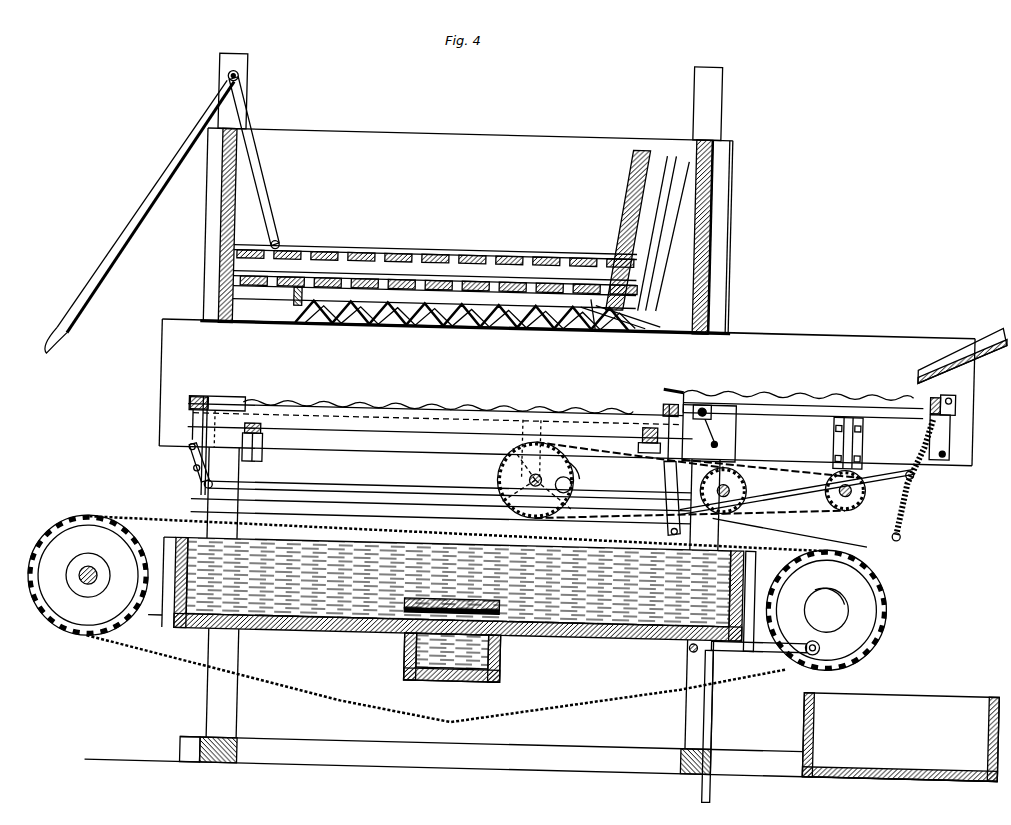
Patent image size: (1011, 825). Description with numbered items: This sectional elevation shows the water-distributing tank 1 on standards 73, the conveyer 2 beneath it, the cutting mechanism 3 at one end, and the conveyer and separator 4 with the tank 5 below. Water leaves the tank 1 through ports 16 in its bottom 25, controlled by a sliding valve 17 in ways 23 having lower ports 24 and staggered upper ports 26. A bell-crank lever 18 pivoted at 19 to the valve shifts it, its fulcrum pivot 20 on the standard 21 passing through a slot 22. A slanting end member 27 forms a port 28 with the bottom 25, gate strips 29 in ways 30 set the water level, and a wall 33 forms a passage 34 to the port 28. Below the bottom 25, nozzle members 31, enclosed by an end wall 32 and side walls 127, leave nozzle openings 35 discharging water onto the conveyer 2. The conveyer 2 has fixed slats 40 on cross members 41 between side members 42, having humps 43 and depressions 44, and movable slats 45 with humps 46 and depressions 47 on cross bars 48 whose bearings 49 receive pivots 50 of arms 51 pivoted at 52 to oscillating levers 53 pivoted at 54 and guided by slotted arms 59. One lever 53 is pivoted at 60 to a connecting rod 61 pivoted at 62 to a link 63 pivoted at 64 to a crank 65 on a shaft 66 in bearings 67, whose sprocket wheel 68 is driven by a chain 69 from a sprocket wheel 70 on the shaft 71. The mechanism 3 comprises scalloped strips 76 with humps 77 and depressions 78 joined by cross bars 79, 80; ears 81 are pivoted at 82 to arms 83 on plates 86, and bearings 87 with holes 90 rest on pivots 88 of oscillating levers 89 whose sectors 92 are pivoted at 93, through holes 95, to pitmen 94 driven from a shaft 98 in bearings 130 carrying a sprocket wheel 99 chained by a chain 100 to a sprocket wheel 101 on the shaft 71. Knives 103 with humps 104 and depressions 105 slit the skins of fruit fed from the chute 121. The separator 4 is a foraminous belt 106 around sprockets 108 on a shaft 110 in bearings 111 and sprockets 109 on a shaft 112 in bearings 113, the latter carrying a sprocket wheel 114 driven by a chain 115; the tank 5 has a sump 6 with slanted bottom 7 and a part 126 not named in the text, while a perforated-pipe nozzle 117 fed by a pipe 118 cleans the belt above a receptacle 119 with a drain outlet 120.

The water-distributing tank 1 is at (368, 126).
The conveyer 2 is at (195, 380).
The perforating, puncturing, cutting or slitting mechanism 3 is at (860, 378).
The conveyer and separator 4 is at (135, 518).
The tank 5 is at (318, 630).
The sump 6 is at (514, 652).
The bottom of sump 7 is at (465, 667).
The ports 16 is at (352, 272).
The sliding valve 17 is at (330, 246).
The bell-crank lever 18 is at (140, 220).
The pivot 19 is at (284, 240).
The pivot 20 is at (228, 78).
The standard 21 is at (226, 60).
The slot 22 is at (240, 76).
The ways 23 is at (560, 248).
The lower ports 24 is at (400, 250).
The tank bottom 25 is at (223, 292).
The upper ports 26 is at (462, 250).
The end member 27 is at (712, 242).
The port 28 is at (716, 262).
The gate strips 29 is at (665, 220).
The ways 30 is at (660, 168).
The nozzle members 31 is at (308, 310).
The end wall 32 is at (298, 290).
The wall 33 is at (640, 310).
The passage 34 is at (597, 322).
The nozzle openings 35 is at (445, 322).
The slats 40 is at (405, 428).
The cross members 41 is at (270, 428).
The side members 42 is at (170, 380).
The humps 43 is at (348, 398).
The depressions 44 is at (400, 398).
The movable slats 45 is at (240, 396).
The humps 46 is at (298, 398).
The depressions 47 is at (340, 398).
The cross bars 48 is at (212, 396).
The bearings 49 is at (197, 402).
The pivots 50 is at (200, 412).
The arms 51 is at (197, 432).
The pivot 52 is at (198, 450).
The oscillating levers 53 is at (205, 466).
The pivot 54 is at (208, 478).
The arm 59 is at (692, 412).
The pivot 60 is at (214, 488).
The connecting rod 61 is at (415, 498).
The pivot 62 is at (674, 484).
The link 63 is at (610, 498).
The pivot 64 is at (580, 474).
The crank 65 is at (556, 508).
The shaft 66 is at (540, 478).
The bearings 67 is at (530, 434).
The sprocket wheel 68 is at (515, 466).
The sprocket chain 69 is at (600, 480).
The sprocket wheel 70 is at (756, 470).
The shaft 71 is at (745, 492).
The standards 73 is at (715, 86).
The strips 76 is at (814, 396).
The humps 77 is at (890, 378).
The depressions 78 is at (908, 380).
The cross bar 79 is at (672, 378).
The cross bar 80 is at (956, 378).
The ear 81 is at (704, 392).
The pivot 82 is at (724, 392).
The arms 83 is at (720, 408).
The plates 86 is at (726, 430).
The bearings 87 is at (962, 380).
The pivots 88 is at (962, 386).
The oscillating levers 89 is at (957, 426).
The holes 90 is at (962, 392).
The sectors 92 is at (916, 486).
The pivot 93 is at (924, 460).
The pitmen 94 is at (885, 462).
The holes 95 is at (912, 516).
The shaft 98 is at (860, 490).
The sprocket wheel 99 is at (841, 502).
The sprocket chain 100 is at (810, 458).
The sprocket wheel 101 is at (770, 444).
The knives 103 is at (826, 378).
The humps 104 is at (776, 378).
The depressions 105 is at (800, 380).
The endless perforate belt 106 is at (330, 692).
The sprockets 108 is at (68, 545).
The sprockets 109 is at (870, 602).
The shaft 110 is at (92, 586).
The bearings 111 is at (158, 610).
The shaft 112 is at (842, 600).
The bearings 113 is at (760, 638).
The sprocket wheel 114 is at (898, 560).
The sprocket chain 115 is at (884, 548).
The nozzle 117 is at (832, 636).
The fluid-supply pipe 118 is at (736, 660).
The receptacle 119 is at (818, 722).
The drain outlet 120 is at (1000, 760).
The chute 121 is at (985, 318).
The plate 126 is at (406, 598).
The side walls 127 is at (528, 268).
The bearings 130 is at (870, 424).